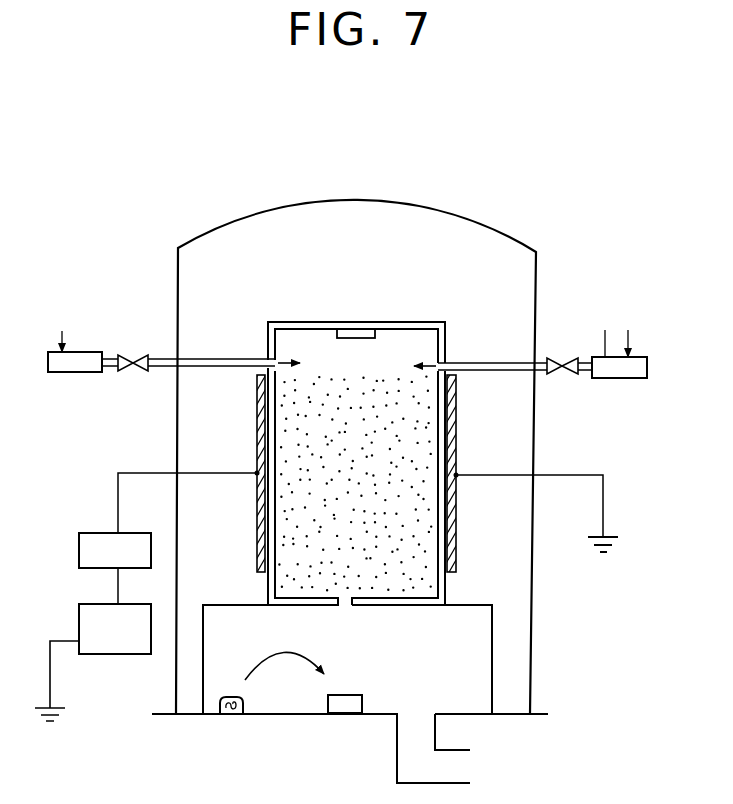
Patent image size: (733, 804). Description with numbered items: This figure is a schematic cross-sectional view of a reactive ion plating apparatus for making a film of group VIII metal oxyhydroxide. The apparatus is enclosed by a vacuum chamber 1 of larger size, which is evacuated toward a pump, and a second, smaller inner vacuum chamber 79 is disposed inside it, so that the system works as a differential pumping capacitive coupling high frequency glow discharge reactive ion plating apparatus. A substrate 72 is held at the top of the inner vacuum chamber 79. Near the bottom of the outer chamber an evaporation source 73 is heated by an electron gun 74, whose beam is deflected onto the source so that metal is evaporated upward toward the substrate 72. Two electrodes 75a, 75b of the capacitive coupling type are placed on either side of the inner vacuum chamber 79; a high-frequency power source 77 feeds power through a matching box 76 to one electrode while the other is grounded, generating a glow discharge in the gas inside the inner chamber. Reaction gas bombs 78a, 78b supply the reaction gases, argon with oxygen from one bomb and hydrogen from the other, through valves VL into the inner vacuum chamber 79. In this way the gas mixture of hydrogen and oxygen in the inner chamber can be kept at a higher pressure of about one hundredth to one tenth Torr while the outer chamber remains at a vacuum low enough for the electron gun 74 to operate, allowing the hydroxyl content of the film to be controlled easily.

The vacuum chamber 1 is at (405, 203).
The substrate 72 is at (365, 335).
The evaporation source 73 is at (348, 695).
The electron gun 74 is at (230, 713).
The electrode 75a is at (258, 424).
The electrode 75b is at (457, 415).
The matching box 76 is at (115, 550).
The high-frequency power source 77 is at (115, 629).
The reaction gas bomb 78a is at (625, 378).
The reaction gas bomb 78b is at (68, 373).
The inner vacuum chamber 79 is at (447, 336).
The valve VL is at (348, 382).